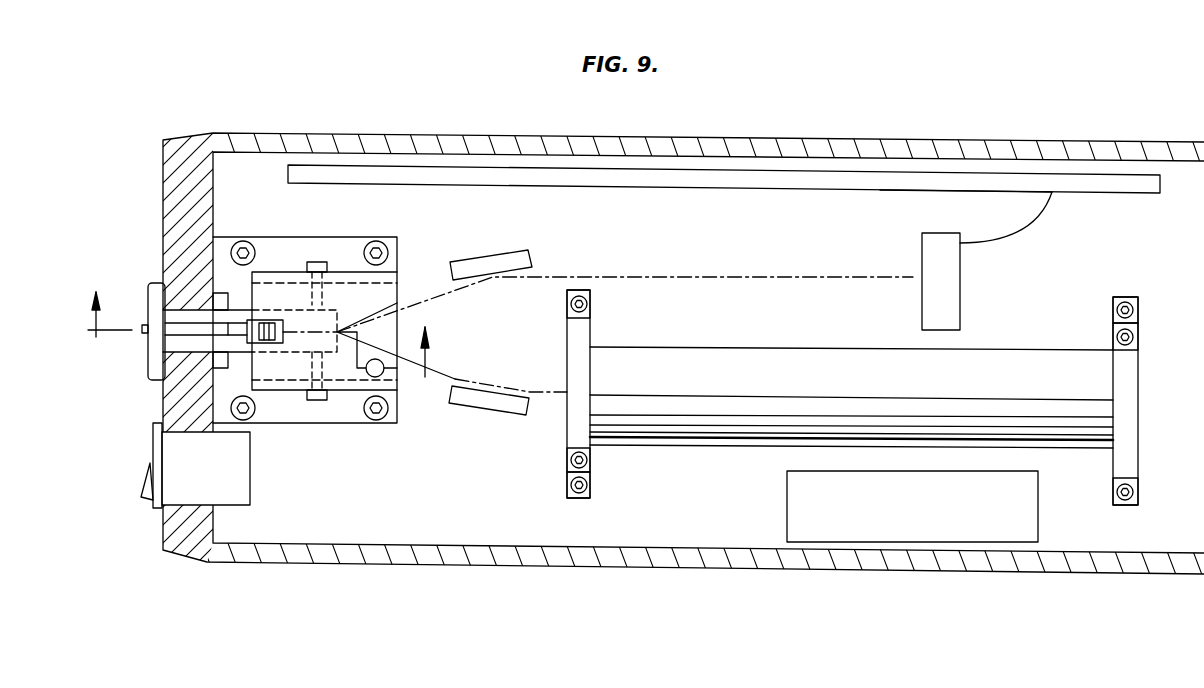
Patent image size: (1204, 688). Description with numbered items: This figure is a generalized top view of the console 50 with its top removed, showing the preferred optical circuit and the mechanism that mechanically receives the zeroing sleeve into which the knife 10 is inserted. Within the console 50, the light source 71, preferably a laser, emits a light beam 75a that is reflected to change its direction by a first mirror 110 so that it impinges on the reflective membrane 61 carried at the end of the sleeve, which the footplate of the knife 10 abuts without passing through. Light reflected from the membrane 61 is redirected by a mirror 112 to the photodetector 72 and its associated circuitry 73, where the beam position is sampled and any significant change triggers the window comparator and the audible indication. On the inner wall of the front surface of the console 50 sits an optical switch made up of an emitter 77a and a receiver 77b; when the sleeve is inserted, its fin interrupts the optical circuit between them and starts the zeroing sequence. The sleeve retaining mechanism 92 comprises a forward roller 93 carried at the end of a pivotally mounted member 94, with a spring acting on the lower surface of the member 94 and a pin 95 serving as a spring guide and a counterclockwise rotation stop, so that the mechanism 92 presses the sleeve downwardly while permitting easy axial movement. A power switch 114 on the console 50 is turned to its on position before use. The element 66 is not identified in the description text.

The console 50 is at (944, 142).
The associated circuitry 73 is at (1161, 185).
The photodetector 72 is at (956, 234).
The light source 71 is at (1006, 388).
The light beam 75a is at (546, 400).
The sleeve retaining mechanism 92 is at (412, 241).
The forward roller 93 is at (257, 330).
The member 94 is at (386, 302).
The pin 95 is at (385, 377).
The reflective membrane 61 is at (337, 392).
The flange 66 is at (152, 362).
The emitter 77a is at (197, 297).
The receiver 77b is at (207, 364).
The first mirror 110 is at (466, 410).
The mirror 112 is at (475, 264).
The power switch 114 is at (147, 489).
The knife 10 is at (267, 332).